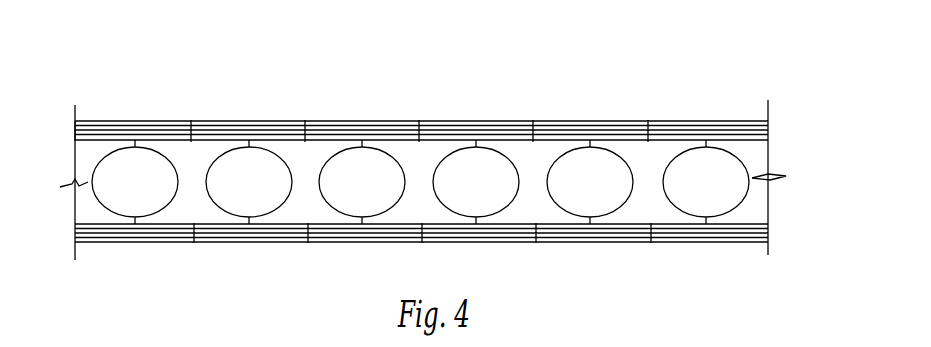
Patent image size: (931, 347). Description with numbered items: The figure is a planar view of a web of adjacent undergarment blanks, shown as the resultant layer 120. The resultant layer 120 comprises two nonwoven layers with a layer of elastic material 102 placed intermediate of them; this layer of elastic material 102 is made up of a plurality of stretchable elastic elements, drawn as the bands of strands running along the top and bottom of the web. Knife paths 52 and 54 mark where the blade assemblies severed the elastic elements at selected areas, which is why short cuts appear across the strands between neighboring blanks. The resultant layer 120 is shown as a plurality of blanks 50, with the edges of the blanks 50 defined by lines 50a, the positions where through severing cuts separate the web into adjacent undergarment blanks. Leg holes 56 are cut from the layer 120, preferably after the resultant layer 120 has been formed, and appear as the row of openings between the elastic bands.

The resultant layer 120 is at (121, 84).
The layer of elastic material 102 is at (74, 141).
The knife path 52 is at (188, 135).
The knife path 54 is at (194, 133).
The blank 50 is at (175, 211).
The line 50a is at (590, 146).
The leg hole 56 is at (258, 193).